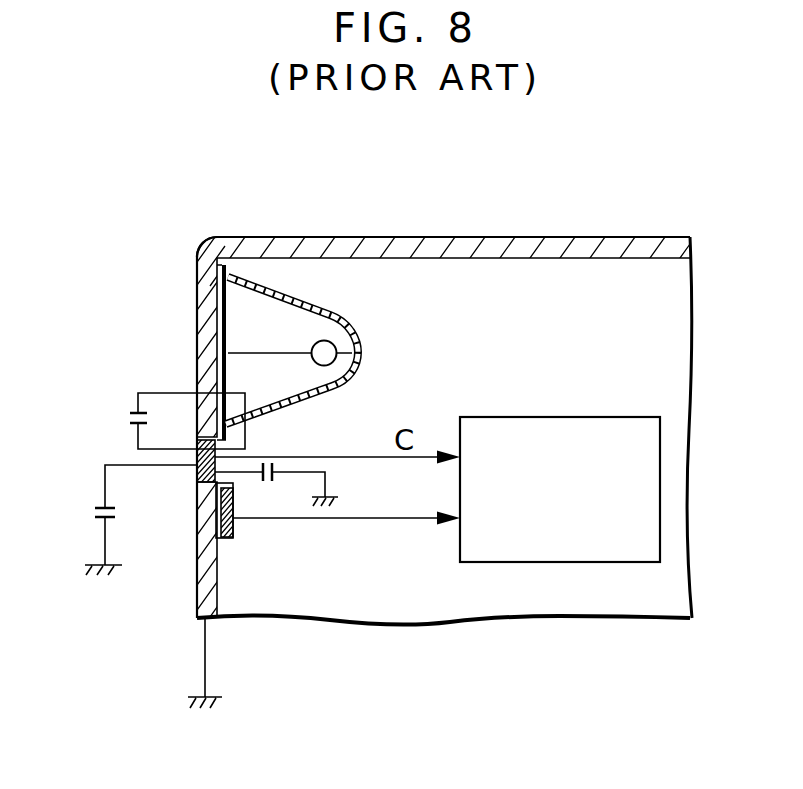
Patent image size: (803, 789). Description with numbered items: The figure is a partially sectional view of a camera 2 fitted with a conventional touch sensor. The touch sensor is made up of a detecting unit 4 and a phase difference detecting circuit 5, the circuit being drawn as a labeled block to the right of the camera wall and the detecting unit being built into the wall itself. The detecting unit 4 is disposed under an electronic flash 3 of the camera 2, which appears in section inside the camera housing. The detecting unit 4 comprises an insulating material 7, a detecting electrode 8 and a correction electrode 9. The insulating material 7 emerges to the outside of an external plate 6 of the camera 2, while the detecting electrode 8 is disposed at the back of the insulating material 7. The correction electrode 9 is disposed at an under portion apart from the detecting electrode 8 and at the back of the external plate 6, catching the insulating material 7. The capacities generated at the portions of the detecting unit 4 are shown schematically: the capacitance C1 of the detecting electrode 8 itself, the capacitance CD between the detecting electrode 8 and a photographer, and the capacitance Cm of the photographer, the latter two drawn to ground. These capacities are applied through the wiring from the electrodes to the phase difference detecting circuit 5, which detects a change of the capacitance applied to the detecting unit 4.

The camera 2 is at (336, 214).
The electronic flash 3 is at (170, 309).
The detecting unit 4 is at (168, 496).
The phase difference detecting circuit 5 is at (551, 417).
The external plate 6 is at (230, 237).
The insulating material 7 is at (233, 535).
The detecting electrode 8 is at (218, 453).
The correction electrode 9 is at (235, 523).
The capacitance between the detecting electrode and a photographer CD is at (164, 421).
The capacitance of the photographer Cm is at (118, 520).
The capacitance of the detecting electrode itself C1 is at (276, 489).